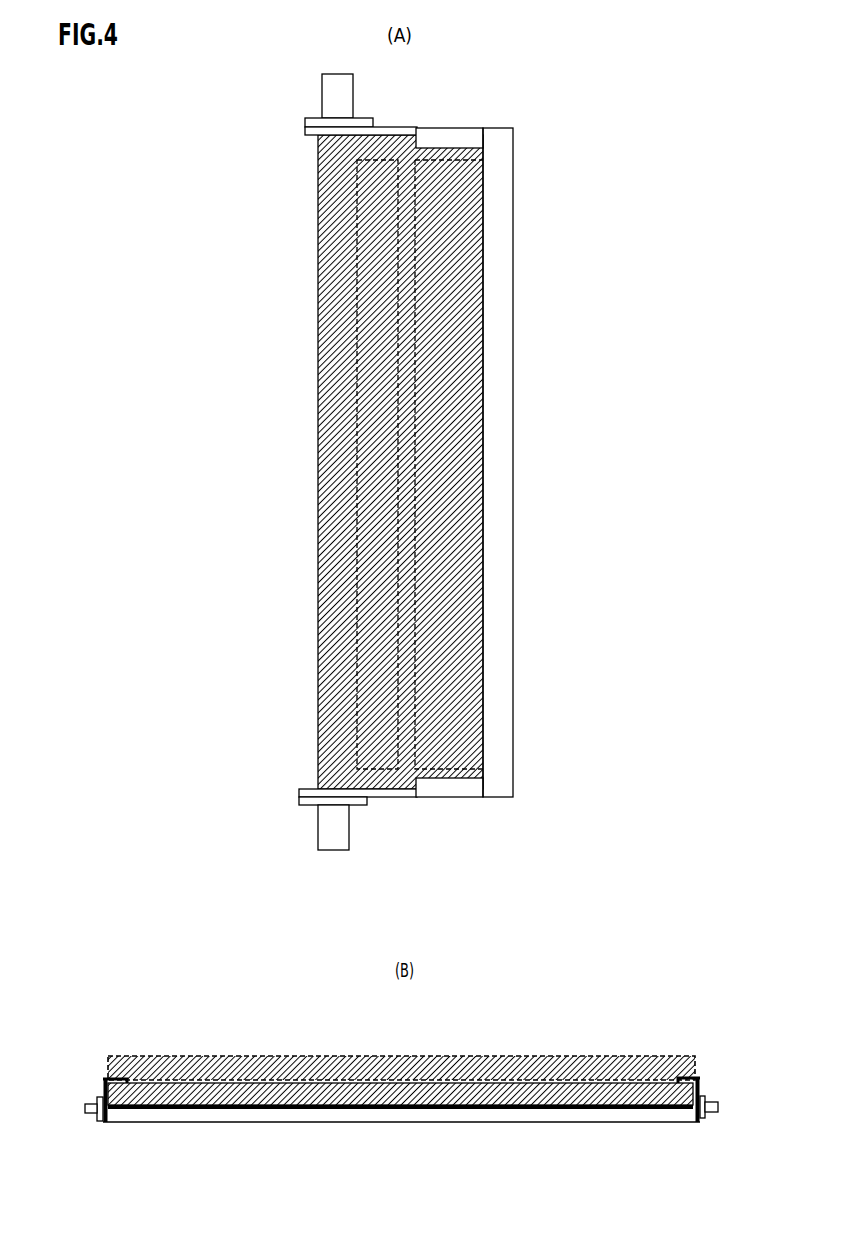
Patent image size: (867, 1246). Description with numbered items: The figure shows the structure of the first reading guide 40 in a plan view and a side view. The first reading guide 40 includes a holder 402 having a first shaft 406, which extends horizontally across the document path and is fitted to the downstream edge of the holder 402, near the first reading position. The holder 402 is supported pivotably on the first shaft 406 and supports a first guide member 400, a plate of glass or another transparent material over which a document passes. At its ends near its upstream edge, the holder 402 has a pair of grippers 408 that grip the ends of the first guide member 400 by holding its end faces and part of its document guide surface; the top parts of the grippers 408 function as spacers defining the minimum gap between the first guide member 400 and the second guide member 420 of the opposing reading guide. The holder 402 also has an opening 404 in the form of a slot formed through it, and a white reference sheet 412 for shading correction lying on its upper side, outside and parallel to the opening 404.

The first reading guide 40 is at (301, 405).
The first guide member 400 is at (333, 245).
The holder 402 is at (503, 775).
The opening 404 is at (368, 509).
The first shaft 406 is at (330, 99).
The grippers 408 is at (457, 136).
The white reference sheet 412 is at (485, 427).
The second guide member 420 is at (410, 1055).